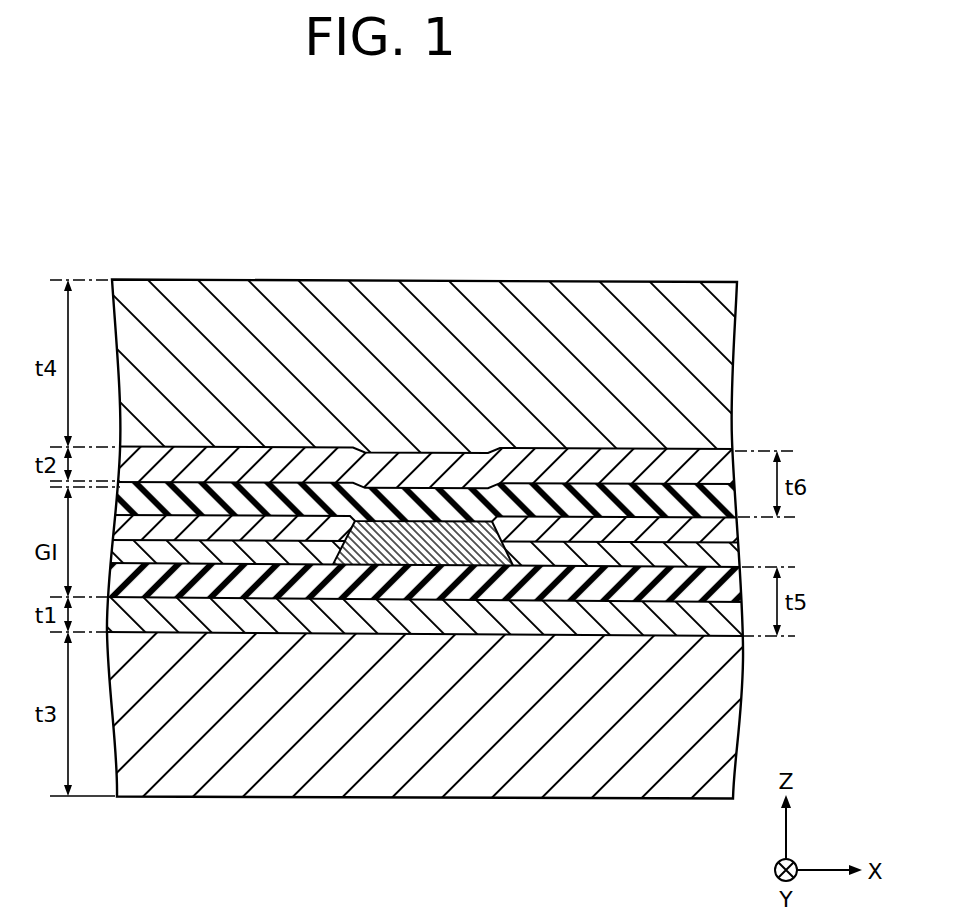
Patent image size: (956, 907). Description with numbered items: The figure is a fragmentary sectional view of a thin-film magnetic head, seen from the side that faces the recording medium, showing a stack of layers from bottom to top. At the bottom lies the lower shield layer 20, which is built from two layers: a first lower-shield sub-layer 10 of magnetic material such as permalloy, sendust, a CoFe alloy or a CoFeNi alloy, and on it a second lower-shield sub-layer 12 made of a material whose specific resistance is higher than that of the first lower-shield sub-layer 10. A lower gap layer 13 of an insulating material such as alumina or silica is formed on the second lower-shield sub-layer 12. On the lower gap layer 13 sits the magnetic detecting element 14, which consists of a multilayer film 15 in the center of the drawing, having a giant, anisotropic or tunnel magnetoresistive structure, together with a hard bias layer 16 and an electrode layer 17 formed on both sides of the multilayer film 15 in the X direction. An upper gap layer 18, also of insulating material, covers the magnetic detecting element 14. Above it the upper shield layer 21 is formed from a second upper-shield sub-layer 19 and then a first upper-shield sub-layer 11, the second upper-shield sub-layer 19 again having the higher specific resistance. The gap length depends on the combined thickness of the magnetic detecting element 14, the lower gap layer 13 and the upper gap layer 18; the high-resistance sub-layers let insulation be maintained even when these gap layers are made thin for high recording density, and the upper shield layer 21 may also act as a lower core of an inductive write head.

The first lower-shield sub-layer 10 is at (352, 845).
The first upper-shield sub-layer 11 is at (481, 293).
The second lower-shield sub-layer 12 is at (317, 617).
The lower gap layer 13 is at (606, 592).
The magnetic detecting element 14 is at (464, 556).
The multilayer film 15 is at (402, 552).
The hard bias layer 16 is at (155, 552).
The electrode layer 17 is at (256, 522).
The upper gap layer 18 is at (640, 493).
The second upper-shield sub-layer 19 is at (567, 462).
The lower shield layer 20 is at (425, 751).
The upper shield layer 21 is at (425, 314).